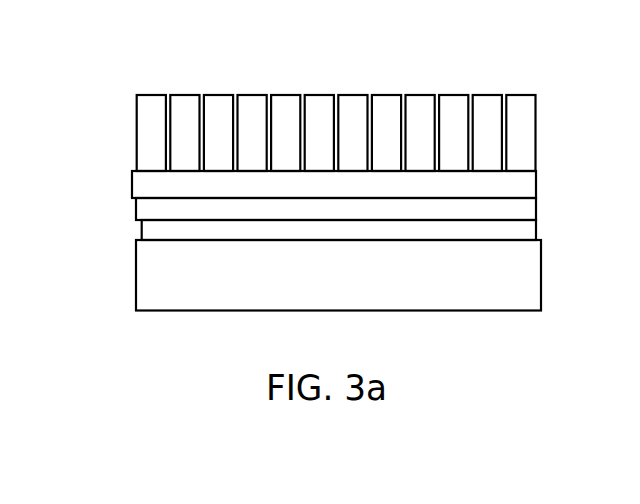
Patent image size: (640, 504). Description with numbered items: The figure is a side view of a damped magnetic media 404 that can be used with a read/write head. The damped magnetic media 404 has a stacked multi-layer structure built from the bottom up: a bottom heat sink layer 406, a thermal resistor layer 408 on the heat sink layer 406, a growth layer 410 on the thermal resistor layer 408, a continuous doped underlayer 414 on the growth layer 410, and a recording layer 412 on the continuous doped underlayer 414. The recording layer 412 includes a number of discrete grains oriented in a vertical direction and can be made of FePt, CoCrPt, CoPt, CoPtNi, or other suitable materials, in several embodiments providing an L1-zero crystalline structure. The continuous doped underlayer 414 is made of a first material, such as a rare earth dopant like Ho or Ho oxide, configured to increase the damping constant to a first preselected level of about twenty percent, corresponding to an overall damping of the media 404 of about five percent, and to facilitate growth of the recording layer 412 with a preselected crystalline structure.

The damped magnetic media 404 is at (372, 71).
The heat sink layer 406 is at (542, 278).
The thermal resistor layer 408 is at (537, 233).
The growth layer 410 is at (537, 210).
The recording layer 412 is at (535, 130).
The continuous doped underlayer 414 is at (536, 176).